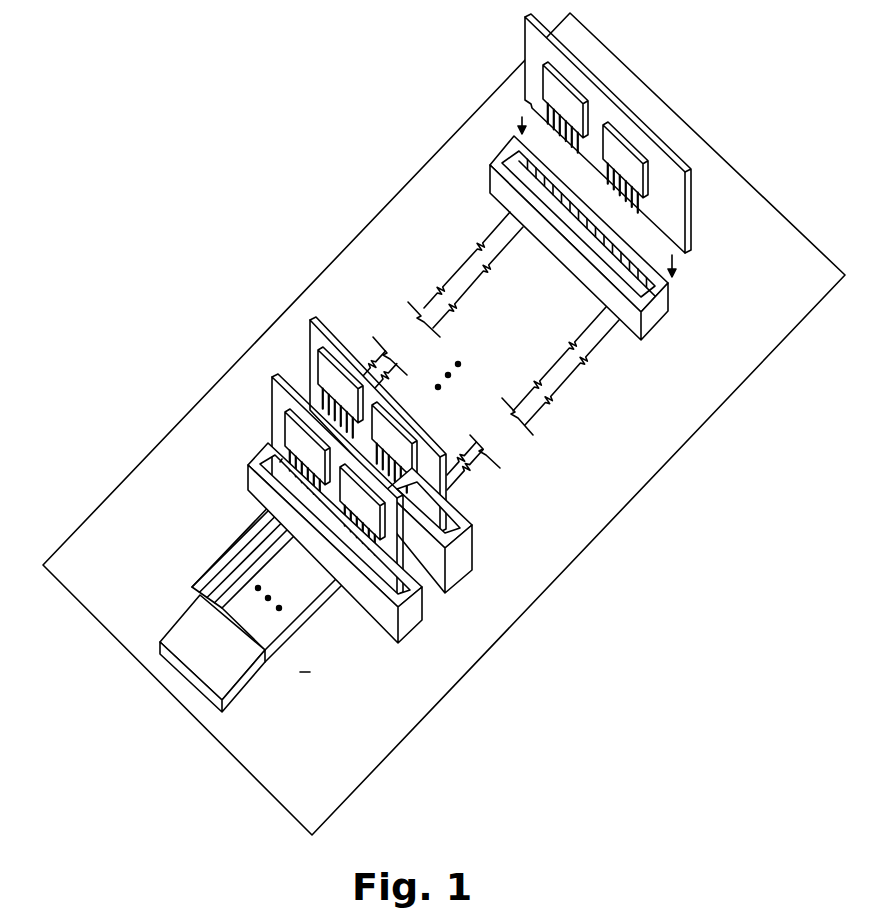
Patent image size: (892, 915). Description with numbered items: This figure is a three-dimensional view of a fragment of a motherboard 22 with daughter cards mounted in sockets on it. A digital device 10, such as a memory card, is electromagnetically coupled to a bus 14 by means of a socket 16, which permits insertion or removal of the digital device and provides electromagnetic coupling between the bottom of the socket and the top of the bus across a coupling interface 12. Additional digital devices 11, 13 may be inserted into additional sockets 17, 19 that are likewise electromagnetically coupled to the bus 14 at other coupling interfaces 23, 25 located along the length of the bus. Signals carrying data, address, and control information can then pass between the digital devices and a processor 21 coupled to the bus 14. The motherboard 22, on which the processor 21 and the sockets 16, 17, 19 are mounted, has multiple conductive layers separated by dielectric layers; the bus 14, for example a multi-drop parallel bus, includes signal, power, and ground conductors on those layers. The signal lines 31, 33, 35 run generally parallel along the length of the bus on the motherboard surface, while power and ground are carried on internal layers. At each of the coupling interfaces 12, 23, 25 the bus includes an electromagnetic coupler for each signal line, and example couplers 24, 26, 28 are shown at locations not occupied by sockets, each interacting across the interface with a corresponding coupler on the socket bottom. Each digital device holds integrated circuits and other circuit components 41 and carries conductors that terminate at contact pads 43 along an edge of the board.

The digital device 10 is at (280, 372).
The additional digital device 11 is at (450, 507).
The coupling interface 12 is at (364, 559).
The additional digital device 13 is at (631, 143).
The bus 14 is at (305, 668).
The socket 16 is at (413, 630).
The additional socket 17 is at (467, 577).
The additional socket 19 is at (610, 263).
The processor 21 is at (247, 625).
The motherboard 22 is at (741, 183).
The coupling interface 23 is at (418, 569).
The electromagnetic coupler 24 is at (553, 405).
The coupling interface 25 is at (618, 325).
The electromagnetic coupler 26 is at (533, 383).
The electromagnetic coupler 28 is at (570, 347).
The signal line 31 is at (210, 572).
The signal line 33 is at (230, 550).
The signal line 35 is at (325, 613).
The integrated circuits and other circuit components 41 is at (280, 423).
The contact pads 43 is at (597, 182).